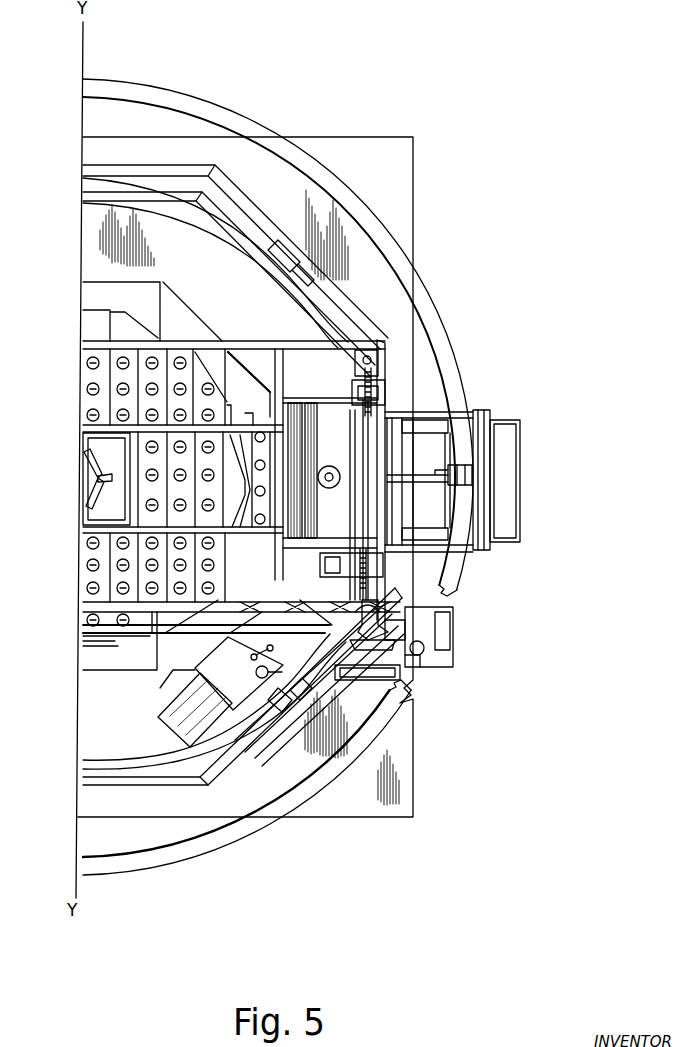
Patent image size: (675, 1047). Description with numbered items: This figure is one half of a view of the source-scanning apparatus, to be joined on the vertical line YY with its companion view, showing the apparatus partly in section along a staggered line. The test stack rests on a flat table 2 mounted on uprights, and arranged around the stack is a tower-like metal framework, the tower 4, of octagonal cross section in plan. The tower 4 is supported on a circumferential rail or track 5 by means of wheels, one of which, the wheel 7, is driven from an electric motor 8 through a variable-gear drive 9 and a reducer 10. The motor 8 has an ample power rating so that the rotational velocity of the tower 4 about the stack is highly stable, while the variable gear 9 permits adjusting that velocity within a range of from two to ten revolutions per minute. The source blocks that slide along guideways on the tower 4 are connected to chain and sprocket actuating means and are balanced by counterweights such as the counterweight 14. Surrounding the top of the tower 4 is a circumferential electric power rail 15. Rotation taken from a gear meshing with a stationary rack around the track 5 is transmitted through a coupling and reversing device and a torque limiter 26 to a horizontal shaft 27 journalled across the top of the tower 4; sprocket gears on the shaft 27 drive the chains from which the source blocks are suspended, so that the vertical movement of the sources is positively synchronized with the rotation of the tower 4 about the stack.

The flat table 2 is at (187, 311).
The tower 4 is at (349, 312).
The circumferential rail or track 5 is at (119, 773).
The wheel 7 is at (283, 702).
The electric motor 8 is at (165, 714).
The variable-gear drive 9 is at (234, 689).
The reducer 10 is at (300, 598).
The counterweight 14 is at (372, 364).
The circumferential electric power rail 15 is at (340, 186).
The torque limiter 26 is at (386, 612).
The horizontal shaft 27 is at (145, 638).